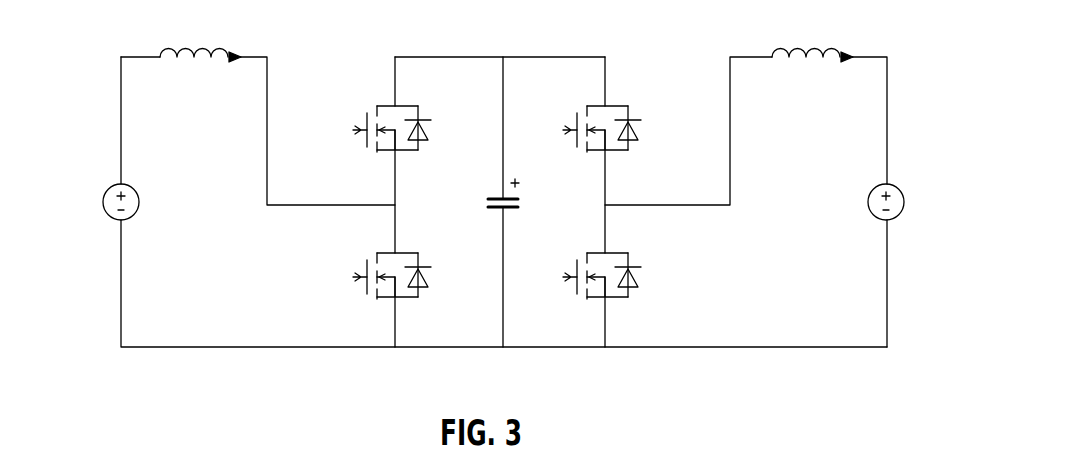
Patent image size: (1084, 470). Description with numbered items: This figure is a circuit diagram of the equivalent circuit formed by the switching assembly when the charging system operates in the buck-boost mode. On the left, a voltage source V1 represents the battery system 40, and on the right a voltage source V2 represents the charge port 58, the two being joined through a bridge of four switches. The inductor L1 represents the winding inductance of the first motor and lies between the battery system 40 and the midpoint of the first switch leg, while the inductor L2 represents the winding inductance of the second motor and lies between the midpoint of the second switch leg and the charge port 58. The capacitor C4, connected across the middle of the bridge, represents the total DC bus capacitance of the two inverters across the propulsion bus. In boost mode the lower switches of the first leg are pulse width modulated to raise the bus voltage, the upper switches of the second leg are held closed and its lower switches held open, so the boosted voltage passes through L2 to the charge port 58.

The battery system 40 is at (91, 200).
The charge port 58 is at (913, 210).
The winding inductance of the first motor L1 is at (200, 33).
The winding inductance of the second motor L2 is at (812, 33).
The total DC bus capacitance C4 is at (485, 200).
The first voltage source V1 is at (108, 189).
The second voltage source V2 is at (929, 171).